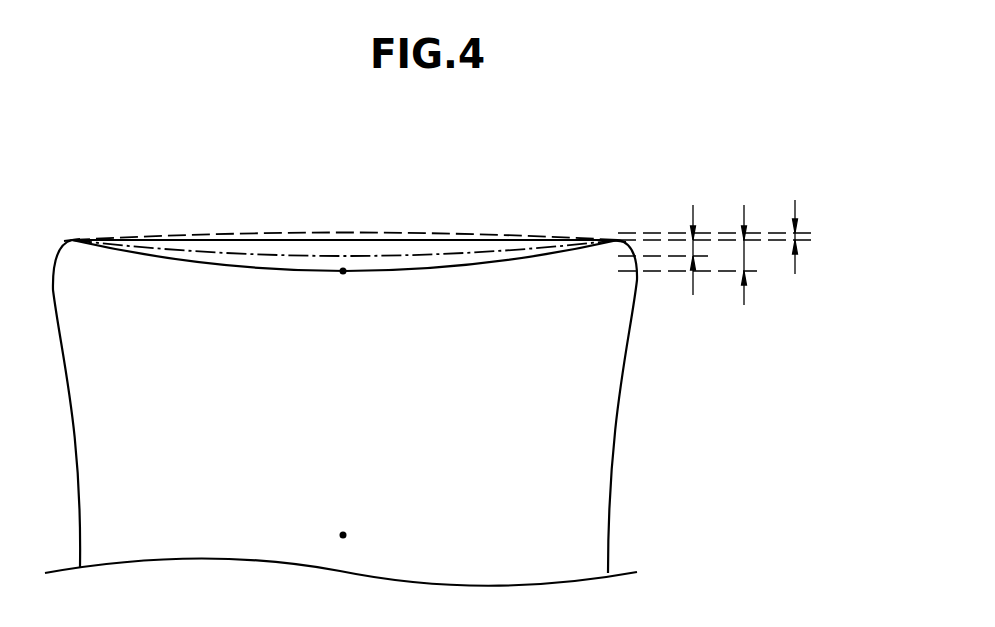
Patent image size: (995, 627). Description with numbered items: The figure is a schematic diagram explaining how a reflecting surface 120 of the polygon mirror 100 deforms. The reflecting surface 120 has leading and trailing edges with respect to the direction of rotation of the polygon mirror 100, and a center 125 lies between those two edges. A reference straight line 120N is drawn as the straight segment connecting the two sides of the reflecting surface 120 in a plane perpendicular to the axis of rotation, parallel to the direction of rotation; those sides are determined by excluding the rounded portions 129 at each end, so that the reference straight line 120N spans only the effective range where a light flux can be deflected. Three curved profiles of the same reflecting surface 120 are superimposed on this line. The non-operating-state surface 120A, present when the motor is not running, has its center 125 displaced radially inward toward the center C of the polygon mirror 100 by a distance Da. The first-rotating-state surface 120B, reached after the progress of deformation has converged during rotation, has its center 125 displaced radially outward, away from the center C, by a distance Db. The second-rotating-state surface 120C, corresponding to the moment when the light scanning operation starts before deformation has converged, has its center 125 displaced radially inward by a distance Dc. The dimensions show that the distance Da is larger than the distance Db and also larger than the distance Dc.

The polygon mirror 100 is at (566, 180).
The reflecting surface 120 is at (622, 371).
The non-operating-state surface 120A is at (305, 267).
The first-rotating-state surface 120B is at (218, 232).
The second-rotating-state surface 120C is at (482, 255).
The reference straight line 120N is at (262, 239).
The center 125 is at (344, 266).
The rounded portions 129 is at (69, 234).
The center C is at (347, 535).
The distance of displacement under non-operating state Da is at (729, 256).
The distance of displacement under first rotating state Db is at (781, 237).
The distance of displacement under second rotating state Dc is at (680, 255).